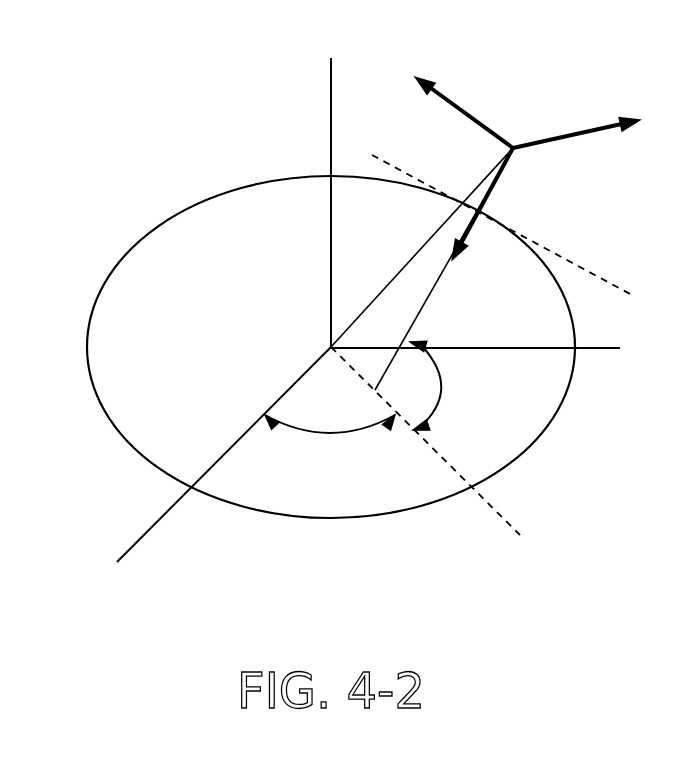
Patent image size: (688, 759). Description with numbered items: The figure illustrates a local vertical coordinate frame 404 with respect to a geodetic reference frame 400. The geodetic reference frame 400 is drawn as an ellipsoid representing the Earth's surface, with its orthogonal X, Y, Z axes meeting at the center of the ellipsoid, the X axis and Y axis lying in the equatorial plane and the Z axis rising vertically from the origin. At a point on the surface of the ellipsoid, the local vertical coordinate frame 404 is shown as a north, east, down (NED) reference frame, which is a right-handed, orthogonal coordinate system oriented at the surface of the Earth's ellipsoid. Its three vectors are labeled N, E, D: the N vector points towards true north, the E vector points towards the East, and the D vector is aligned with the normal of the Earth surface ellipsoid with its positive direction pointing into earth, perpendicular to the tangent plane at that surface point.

The geodetic reference frame 400 is at (381, 304).
The local vertical coordinate frame 404 is at (529, 176).
The x-axis X is at (214, 469).
The y-axis Y is at (489, 349).
The z-axis Z is at (332, 190).
The north direction N is at (452, 104).
The east direction E is at (587, 126).
The down direction D is at (479, 220).